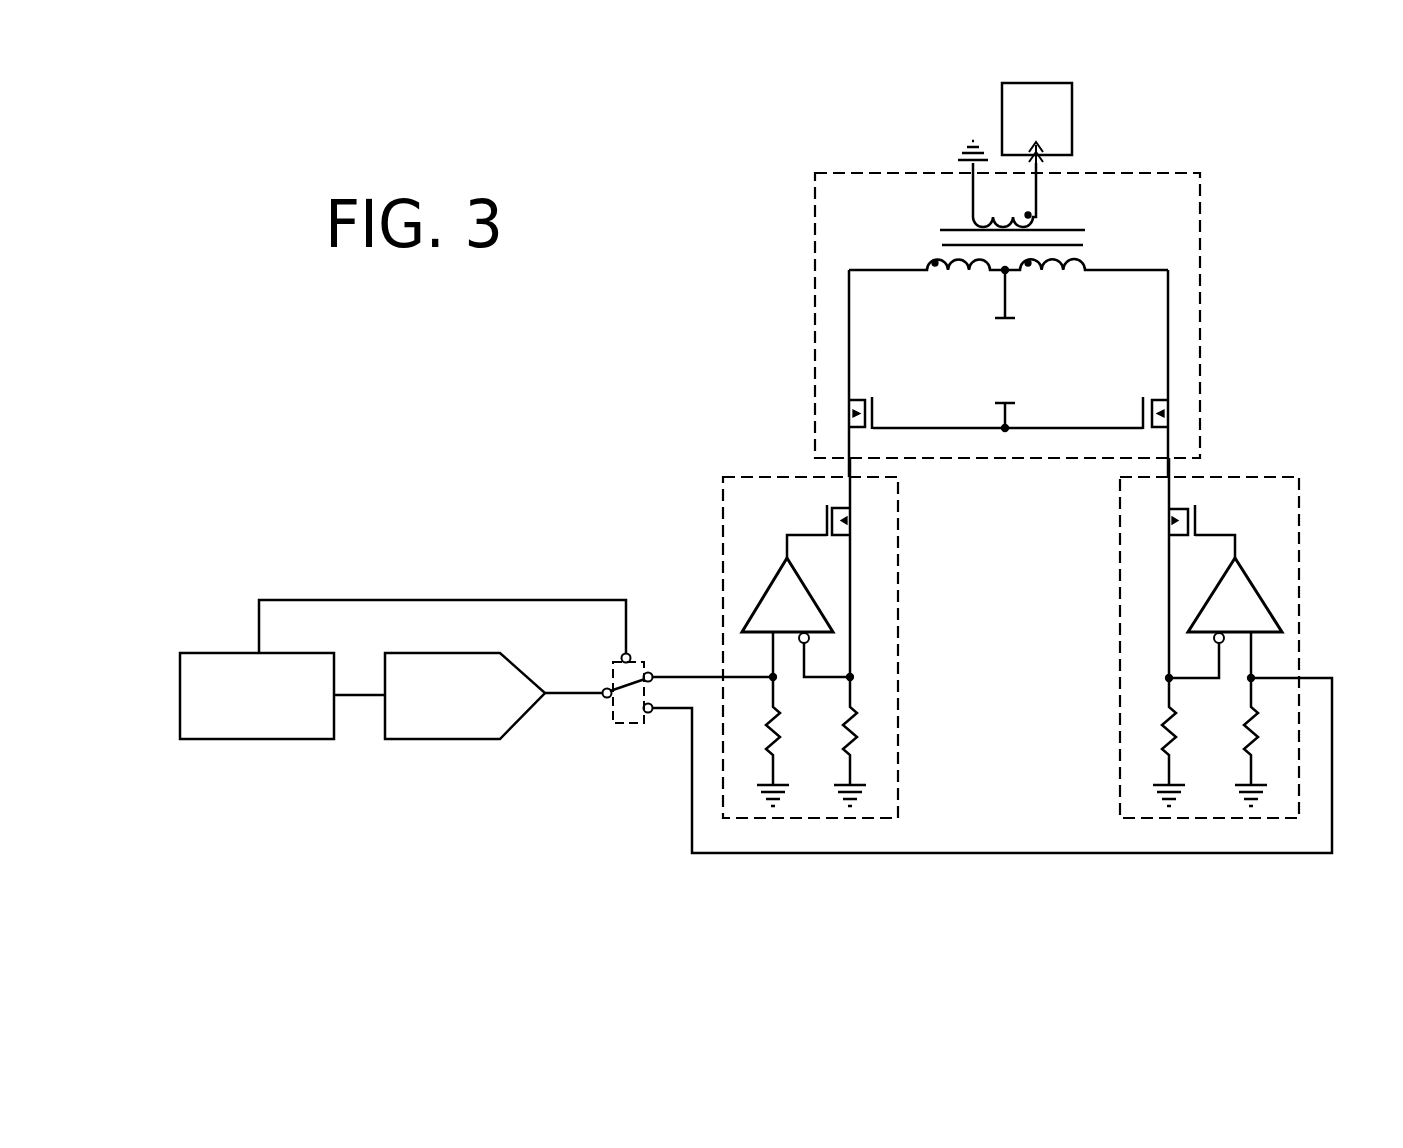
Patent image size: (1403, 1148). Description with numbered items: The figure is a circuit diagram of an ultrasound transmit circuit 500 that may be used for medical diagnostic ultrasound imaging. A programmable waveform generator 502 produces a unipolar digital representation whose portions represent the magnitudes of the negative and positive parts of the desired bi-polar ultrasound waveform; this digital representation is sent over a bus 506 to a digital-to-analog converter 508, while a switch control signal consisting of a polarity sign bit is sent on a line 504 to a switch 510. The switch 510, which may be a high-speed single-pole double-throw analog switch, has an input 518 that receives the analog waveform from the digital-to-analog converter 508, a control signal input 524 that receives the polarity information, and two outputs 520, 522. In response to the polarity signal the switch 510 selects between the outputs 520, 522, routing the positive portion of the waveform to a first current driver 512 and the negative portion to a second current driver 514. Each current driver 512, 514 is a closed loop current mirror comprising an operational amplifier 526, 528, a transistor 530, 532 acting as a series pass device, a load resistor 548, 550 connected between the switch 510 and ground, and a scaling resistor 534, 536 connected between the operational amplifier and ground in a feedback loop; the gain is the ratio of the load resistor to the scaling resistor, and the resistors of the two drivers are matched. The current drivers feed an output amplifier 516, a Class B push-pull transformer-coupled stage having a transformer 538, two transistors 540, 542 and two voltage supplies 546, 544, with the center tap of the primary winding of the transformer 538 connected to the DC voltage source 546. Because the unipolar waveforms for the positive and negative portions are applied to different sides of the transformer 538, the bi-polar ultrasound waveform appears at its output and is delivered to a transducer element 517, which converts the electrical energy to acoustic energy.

The ultrasound transmit circuit 500 is at (425, 491).
The programmable waveform generator 502 is at (282, 740).
The line 504 is at (259, 641).
The bus 506 is at (350, 694).
The digital-to-analog converter 508 is at (470, 740).
The switch 510 is at (617, 724).
The first current driver 512 is at (723, 483).
The second current driver 514 is at (1299, 489).
The output amplifier 516 is at (815, 178).
The transducer element 517 is at (1072, 110).
The input 518 is at (605, 698).
The first output 520 is at (650, 673).
The second output 522 is at (648, 713).
The control signal input 524 is at (622, 655).
The operational amplifier 526 is at (812, 612).
The operational amplifier 528 is at (1218, 607).
The transistor 530 is at (845, 530).
The transistor 532 is at (1170, 530).
The resistor 534 is at (852, 745).
The resistor 536 is at (1170, 745).
The transformer 538 is at (1085, 258).
The transistor 540 is at (850, 407).
The transistor 542 is at (1165, 407).
The voltage supply 544 is at (1003, 405).
The voltage supply 546 is at (1003, 300).
The resistor 548 is at (784, 752).
The resistor 550 is at (1245, 740).